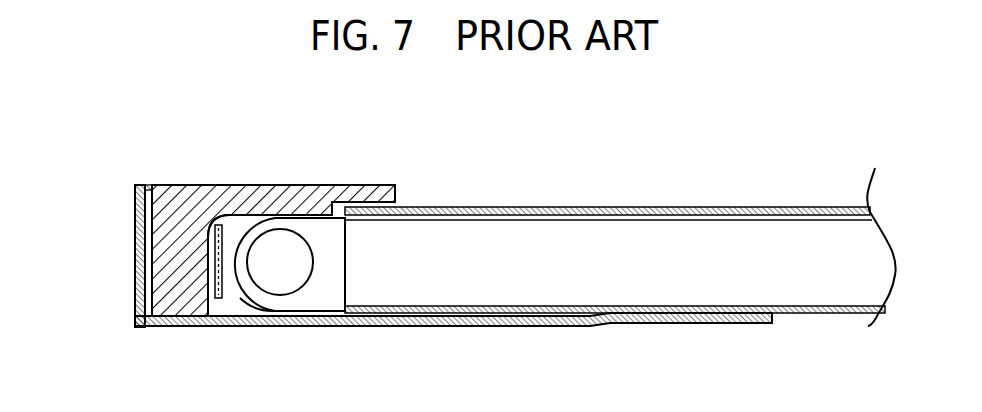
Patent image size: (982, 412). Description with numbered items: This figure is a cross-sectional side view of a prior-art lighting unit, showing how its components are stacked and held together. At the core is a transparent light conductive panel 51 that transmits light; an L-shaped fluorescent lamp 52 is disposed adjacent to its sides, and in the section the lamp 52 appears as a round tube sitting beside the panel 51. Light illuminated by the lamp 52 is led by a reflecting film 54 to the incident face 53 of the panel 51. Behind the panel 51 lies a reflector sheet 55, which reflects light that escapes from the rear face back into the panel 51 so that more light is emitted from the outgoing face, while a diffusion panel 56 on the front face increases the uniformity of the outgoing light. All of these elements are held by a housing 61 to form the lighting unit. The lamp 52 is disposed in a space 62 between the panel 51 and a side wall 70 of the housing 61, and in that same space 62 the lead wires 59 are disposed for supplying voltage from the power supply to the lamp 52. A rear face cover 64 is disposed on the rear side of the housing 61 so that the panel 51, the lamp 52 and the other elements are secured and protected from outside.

The transparent light conductive panel 51 is at (622, 275).
The L-shaped fluorescent lamp 52 is at (282, 267).
The incident face 53 is at (342, 250).
The reflecting film 54 is at (247, 308).
The reflector sheet 55 is at (833, 317).
The diffusion panel 56 is at (640, 210).
The lead wires 59 is at (190, 316).
The housing 61 is at (180, 273).
The space 62 is at (233, 228).
The rear face cover 64 is at (500, 325).
The side wall 70 is at (212, 257).